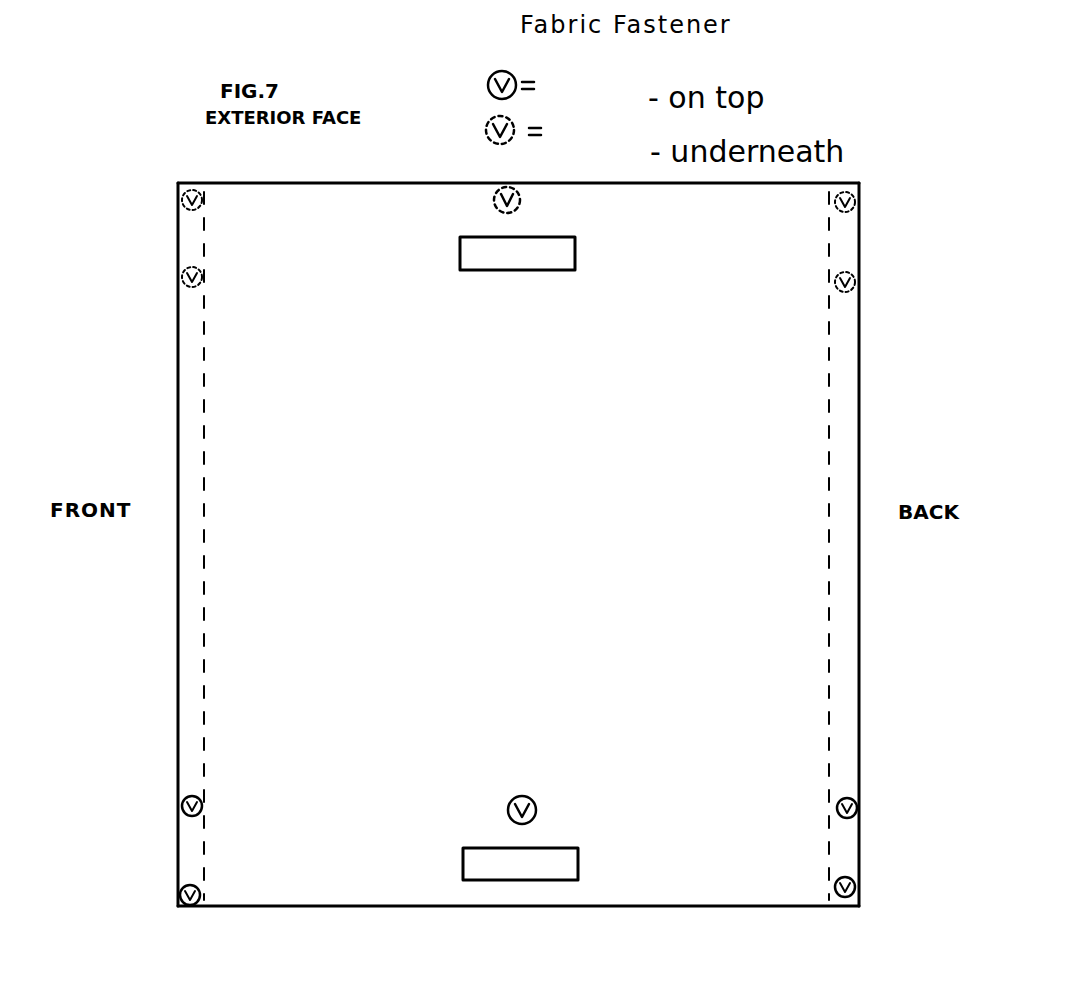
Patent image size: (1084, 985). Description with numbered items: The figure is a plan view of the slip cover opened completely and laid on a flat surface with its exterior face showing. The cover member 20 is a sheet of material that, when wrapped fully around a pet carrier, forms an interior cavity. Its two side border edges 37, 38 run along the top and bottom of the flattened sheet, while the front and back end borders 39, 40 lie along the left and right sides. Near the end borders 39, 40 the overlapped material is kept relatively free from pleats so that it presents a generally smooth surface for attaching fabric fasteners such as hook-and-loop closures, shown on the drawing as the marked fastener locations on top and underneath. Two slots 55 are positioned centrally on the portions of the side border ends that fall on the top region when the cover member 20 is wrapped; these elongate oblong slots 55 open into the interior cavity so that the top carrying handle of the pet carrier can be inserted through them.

The cover member 20 is at (518, 546).
The side border edge 37 is at (375, 180).
The side border edge 38 is at (405, 908).
The front end border 39 is at (862, 295).
The back end border 40 is at (175, 183).
The slot 55 is at (519, 558).